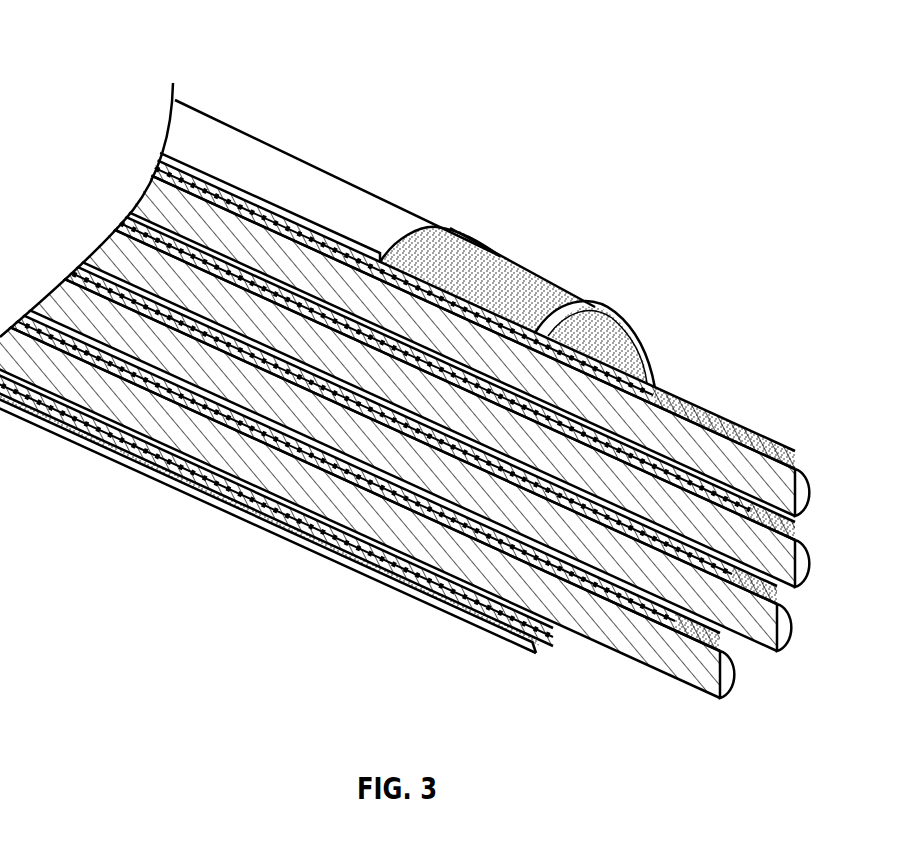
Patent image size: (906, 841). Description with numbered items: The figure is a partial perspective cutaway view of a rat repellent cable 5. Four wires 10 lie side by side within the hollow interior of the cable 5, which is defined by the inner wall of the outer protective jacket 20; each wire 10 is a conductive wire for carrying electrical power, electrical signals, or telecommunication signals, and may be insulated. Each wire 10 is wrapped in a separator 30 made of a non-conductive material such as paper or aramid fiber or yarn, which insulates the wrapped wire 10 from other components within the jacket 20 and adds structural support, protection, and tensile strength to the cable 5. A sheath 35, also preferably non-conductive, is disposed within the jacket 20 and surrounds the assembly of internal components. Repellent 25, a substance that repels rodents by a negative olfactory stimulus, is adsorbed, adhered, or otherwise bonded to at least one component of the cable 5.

The rat repellent cable 5 is at (438, 357).
The wire 10 is at (807, 490).
The outer protective jacket 20 is at (340, 203).
The repellent 25 is at (560, 307).
The separator 30 is at (757, 437).
The sheath 35 is at (495, 292).